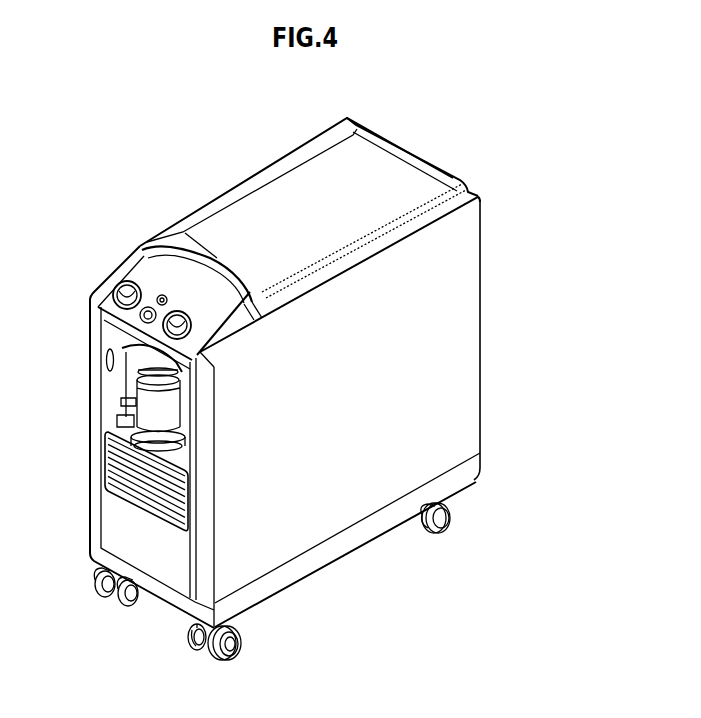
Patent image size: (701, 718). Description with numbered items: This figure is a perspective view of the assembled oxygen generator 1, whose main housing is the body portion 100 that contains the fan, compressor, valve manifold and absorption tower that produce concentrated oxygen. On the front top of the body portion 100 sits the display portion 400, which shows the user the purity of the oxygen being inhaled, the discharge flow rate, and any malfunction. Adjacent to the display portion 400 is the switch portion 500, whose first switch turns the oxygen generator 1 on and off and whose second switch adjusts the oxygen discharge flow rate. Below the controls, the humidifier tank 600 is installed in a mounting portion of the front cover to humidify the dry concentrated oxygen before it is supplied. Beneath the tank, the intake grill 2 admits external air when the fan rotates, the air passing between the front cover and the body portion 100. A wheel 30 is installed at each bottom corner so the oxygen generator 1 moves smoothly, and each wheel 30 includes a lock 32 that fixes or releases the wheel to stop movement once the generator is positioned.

The oxygen generator 1 is at (505, 108).
The body portion 100 is at (492, 333).
The display portion 400 is at (134, 247).
The switch portion 500 is at (101, 304).
The humidifier tank 600 is at (121, 399).
The intake grill 2 is at (105, 472).
The wheel 30 is at (240, 650).
The lock 32 is at (189, 643).